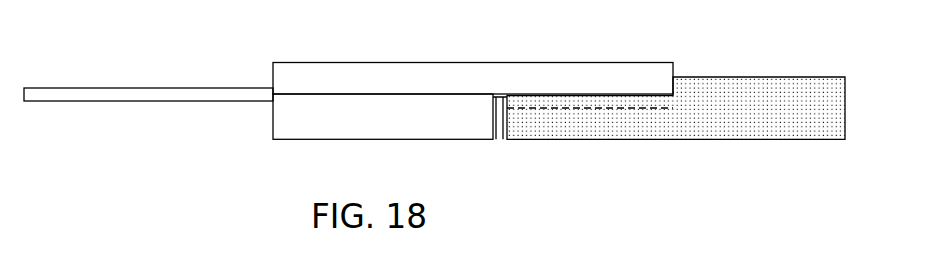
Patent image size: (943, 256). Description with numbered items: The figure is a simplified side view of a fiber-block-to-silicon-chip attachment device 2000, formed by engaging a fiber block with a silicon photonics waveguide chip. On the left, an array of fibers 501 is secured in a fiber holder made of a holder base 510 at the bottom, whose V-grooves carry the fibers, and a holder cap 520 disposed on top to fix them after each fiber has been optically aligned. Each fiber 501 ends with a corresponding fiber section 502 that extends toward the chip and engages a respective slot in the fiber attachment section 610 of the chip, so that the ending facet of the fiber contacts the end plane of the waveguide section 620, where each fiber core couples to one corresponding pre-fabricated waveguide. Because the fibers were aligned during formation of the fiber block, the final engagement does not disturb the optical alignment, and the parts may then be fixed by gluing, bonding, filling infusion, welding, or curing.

The fiber-block-to-silicon-chip attachment device 2000 is at (524, 35).
The fiber 501 is at (125, 87).
The fiber section 502 is at (496, 139).
The holder base 510 is at (276, 123).
The holder cap 520 is at (365, 64).
The fiber attachment section 610 is at (593, 135).
The waveguide section 620 is at (780, 77).